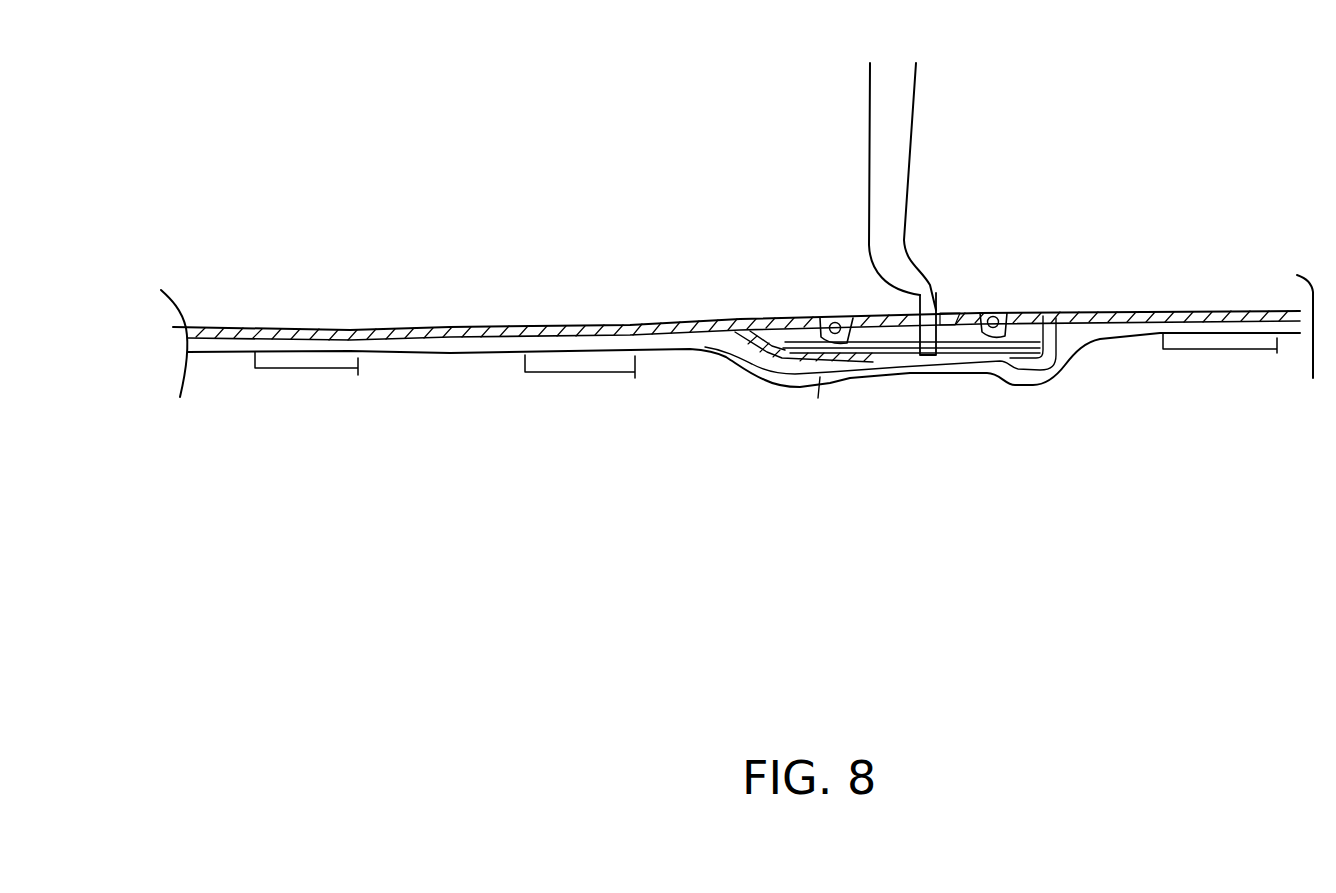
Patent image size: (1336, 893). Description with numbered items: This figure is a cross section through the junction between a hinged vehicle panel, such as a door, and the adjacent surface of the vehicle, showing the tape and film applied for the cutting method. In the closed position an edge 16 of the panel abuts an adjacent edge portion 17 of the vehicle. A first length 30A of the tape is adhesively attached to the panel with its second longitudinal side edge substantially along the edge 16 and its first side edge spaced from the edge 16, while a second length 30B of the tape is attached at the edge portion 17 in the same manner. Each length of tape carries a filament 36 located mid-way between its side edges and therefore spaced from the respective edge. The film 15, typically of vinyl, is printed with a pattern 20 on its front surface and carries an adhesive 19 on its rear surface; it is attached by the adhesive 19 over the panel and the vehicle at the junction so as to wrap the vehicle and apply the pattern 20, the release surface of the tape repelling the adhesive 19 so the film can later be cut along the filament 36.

The film 15 is at (393, 352).
The edge of the panel 16 is at (933, 307).
The edge portion of the vehicle 17 is at (945, 302).
The adhesive 19 is at (450, 326).
The pattern 20 is at (303, 362).
The first length of the tape 30A is at (818, 312).
The second length of the tape 30B is at (1020, 313).
The filament 36 is at (840, 310).